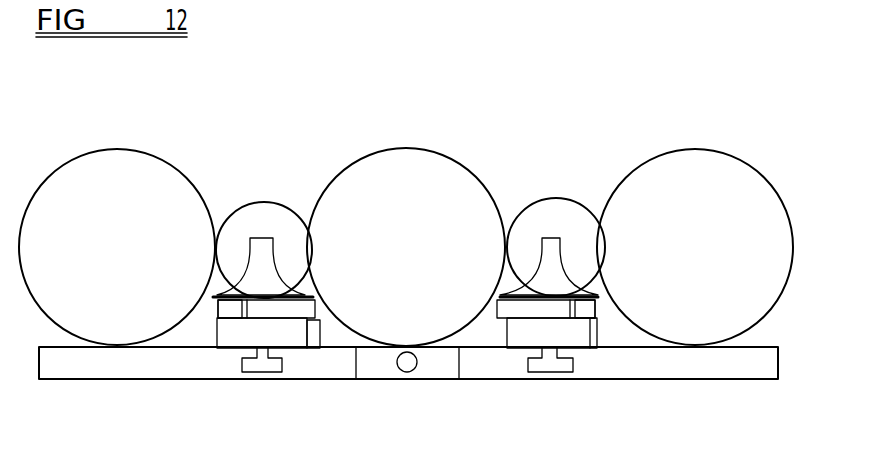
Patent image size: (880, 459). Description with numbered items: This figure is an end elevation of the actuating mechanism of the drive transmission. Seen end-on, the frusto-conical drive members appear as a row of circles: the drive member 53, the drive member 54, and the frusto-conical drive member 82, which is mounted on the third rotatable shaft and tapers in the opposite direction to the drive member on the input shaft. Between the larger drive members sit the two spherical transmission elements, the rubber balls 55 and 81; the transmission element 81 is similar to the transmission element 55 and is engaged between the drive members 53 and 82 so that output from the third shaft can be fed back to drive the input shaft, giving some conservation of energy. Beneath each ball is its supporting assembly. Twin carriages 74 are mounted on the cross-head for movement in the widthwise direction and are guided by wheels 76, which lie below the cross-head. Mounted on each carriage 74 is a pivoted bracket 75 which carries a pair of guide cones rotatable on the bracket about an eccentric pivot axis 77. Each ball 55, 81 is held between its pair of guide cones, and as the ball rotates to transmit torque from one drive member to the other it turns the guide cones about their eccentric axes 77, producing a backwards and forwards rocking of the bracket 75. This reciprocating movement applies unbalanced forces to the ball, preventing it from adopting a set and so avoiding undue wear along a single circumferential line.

The drive member 53 is at (455, 177).
The roller 54 is at (713, 172).
The transmission element 55 is at (550, 213).
The transmission element 81 is at (262, 210).
The frusto-conical drive member 82 is at (157, 172).
The carriage 74 is at (228, 330).
The pivoted bracket 75 is at (313, 350).
The wheels 76 is at (252, 364).
The eccentric pivot axis 77 is at (232, 307).